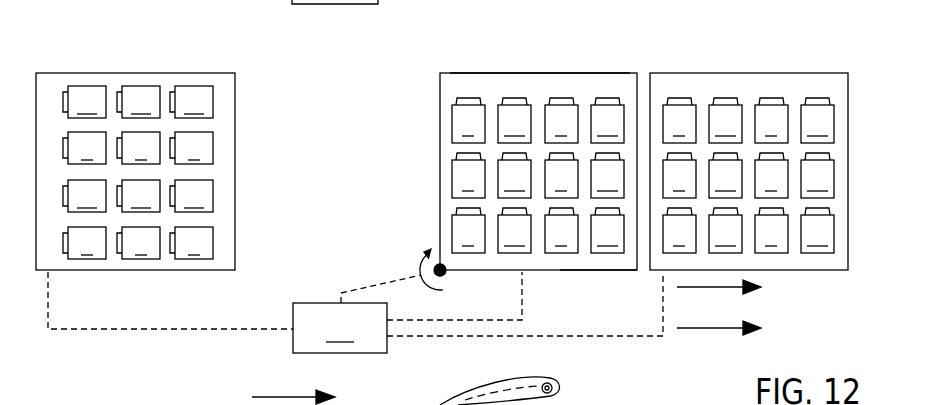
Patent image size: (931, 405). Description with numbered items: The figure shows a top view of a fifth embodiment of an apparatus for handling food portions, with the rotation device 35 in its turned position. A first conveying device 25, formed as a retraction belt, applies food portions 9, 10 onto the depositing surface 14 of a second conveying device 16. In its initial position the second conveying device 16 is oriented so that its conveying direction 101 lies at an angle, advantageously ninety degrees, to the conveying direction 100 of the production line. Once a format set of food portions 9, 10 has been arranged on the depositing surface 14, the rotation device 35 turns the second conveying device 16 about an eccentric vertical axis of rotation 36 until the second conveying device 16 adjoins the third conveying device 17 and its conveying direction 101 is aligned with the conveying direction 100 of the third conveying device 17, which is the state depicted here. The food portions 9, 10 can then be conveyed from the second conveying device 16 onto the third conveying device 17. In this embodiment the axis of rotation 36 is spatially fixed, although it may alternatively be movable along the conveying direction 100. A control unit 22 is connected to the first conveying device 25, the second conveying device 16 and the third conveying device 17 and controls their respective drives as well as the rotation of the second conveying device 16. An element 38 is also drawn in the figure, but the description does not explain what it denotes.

The food portion 9 is at (425, 178).
The food portion 10 is at (448, 169).
The depositing surface 14 is at (629, 81).
The second conveying device 16 is at (600, 285).
The third conveying device 17 is at (750, 64).
The control unit 22 is at (340, 328).
The first conveying device 25 is at (140, 64).
The rotation device 35 is at (540, 64).
The vertical axis of rotation 36 is at (446, 277).
The robot arm / gripper 38 is at (415, 404).
The conveying direction 100 is at (719, 300).
The conveying direction 101 is at (719, 341).